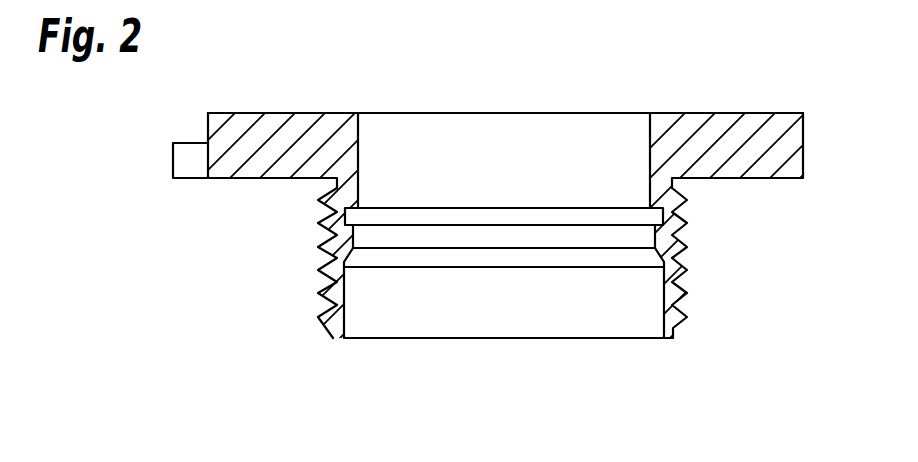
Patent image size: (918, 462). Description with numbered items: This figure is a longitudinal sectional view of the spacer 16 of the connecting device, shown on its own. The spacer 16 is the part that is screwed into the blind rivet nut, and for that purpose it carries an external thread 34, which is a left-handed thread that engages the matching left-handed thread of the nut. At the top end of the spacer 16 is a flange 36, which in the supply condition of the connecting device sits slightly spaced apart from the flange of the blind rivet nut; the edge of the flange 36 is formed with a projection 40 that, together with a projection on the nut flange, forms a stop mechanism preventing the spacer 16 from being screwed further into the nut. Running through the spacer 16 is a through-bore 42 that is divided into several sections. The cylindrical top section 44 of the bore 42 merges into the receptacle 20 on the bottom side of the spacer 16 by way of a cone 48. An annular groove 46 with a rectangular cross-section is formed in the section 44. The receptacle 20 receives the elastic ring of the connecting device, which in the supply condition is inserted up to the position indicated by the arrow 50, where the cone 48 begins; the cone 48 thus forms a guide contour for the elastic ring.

The spacer 16 is at (720, 92).
The receptacle 20 is at (663, 295).
The external thread 34 is at (684, 252).
The flange 36 is at (803, 145).
The projection 40 is at (180, 157).
The through-bore 42 is at (450, 135).
The cylindrical top section 44 is at (650, 180).
The annular groove 46 is at (650, 207).
The cone 48 is at (662, 261).
The arrow 50 is at (658, 268).